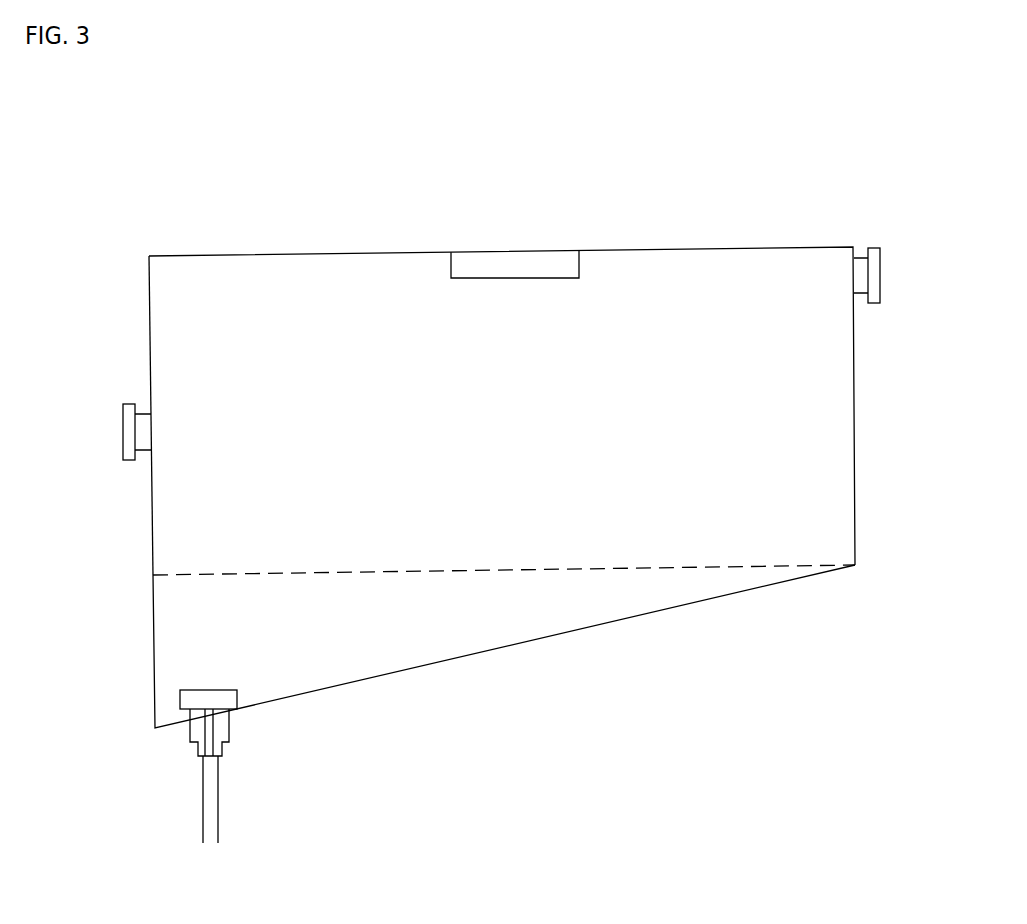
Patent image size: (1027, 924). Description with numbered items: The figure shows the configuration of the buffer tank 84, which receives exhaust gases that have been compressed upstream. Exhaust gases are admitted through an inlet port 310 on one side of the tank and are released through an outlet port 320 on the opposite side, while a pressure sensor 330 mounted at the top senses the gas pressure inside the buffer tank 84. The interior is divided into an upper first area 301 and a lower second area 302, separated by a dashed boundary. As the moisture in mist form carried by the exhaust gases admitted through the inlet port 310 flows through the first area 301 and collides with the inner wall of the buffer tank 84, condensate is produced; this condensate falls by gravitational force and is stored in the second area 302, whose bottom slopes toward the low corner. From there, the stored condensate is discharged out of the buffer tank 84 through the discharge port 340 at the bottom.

The buffer tank 84 is at (549, 431).
The first area 301 is at (810, 380).
The second area 302 is at (477, 628).
The inlet port 310 is at (873, 247).
The outlet port 320 is at (123, 432).
The pressure sensor 330 is at (470, 270).
The discharge port 340 is at (220, 693).